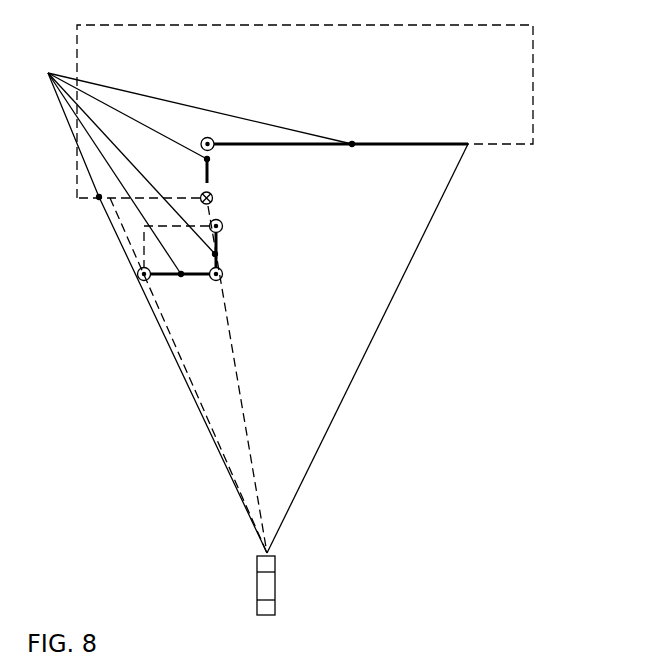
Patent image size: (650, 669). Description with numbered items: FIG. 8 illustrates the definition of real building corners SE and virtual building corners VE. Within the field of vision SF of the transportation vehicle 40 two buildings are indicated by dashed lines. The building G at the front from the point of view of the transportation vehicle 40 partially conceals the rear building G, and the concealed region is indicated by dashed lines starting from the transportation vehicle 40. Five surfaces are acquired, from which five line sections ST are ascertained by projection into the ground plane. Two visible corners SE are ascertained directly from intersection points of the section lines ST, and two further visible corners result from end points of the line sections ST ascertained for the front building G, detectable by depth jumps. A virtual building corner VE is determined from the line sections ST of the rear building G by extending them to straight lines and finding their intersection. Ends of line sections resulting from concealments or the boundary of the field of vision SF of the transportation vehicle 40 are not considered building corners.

The line section ST is at (190, 299).
The building G is at (533, 93).
The virtual building corner VE is at (216, 198).
The real building corner SE is at (210, 279).
The field of vision SF is at (338, 409).
The transportation vehicle 40 is at (257, 584).